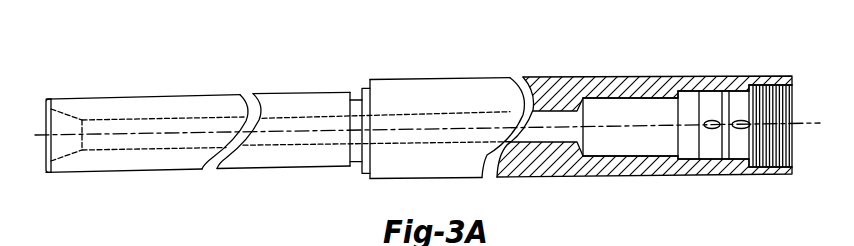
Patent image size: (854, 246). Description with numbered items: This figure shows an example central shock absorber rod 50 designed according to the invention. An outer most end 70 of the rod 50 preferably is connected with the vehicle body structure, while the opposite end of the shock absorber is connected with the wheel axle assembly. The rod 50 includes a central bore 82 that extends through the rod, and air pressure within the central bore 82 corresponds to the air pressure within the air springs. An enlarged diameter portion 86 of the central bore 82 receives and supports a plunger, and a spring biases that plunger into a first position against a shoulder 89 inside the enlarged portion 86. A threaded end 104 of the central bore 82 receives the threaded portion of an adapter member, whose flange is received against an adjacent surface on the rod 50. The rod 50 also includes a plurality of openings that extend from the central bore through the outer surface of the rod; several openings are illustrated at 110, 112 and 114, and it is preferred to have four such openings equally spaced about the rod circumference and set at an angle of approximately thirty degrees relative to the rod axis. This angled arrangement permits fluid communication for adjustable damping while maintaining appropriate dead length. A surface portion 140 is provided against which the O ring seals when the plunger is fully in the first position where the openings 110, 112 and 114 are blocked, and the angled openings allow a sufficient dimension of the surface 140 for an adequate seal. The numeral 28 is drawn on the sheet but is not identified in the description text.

The conduit 28 is at (176, 4).
The rod 50 is at (415, 70).
The outer most end 70 is at (132, 187).
The central bore 82 is at (282, 139).
The enlarged diameter portion 86 is at (590, 100).
The shoulder 89 is at (684, 97).
The threaded end 104 is at (795, 146).
The opening 110 is at (734, 94).
The opening 112 is at (735, 172).
The opening 114 is at (704, 124).
The surface portion 140 is at (748, 84).